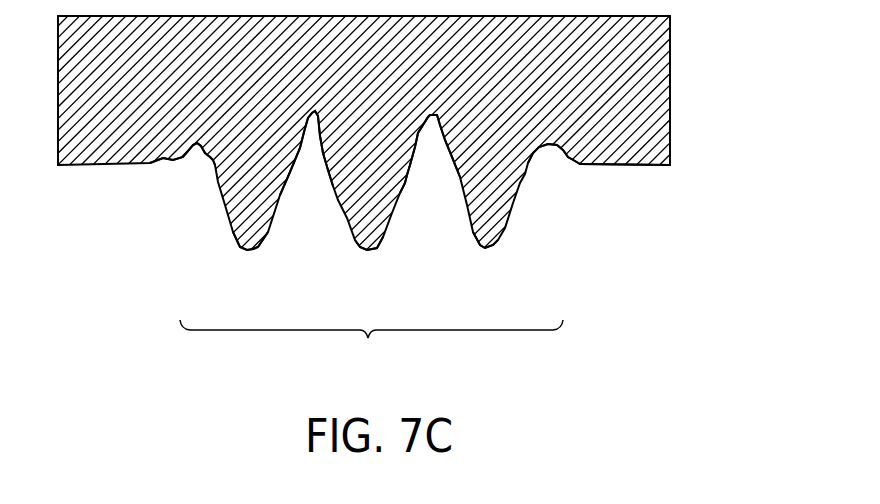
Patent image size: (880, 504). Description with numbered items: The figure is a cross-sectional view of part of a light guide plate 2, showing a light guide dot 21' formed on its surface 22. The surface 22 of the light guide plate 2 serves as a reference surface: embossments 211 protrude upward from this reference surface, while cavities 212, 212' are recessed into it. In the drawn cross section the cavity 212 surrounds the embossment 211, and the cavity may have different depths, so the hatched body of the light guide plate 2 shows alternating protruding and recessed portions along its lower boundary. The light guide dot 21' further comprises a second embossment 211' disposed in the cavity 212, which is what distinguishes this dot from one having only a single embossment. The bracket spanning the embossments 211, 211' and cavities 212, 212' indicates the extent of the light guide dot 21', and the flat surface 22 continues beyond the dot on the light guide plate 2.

The light guide plate 2 is at (668, 72).
The surface 22 is at (637, 167).
The cavity 212 is at (365, 193).
The cavity 212' is at (370, 177).
The embossment 211 is at (306, 274).
The second embossment 211' is at (490, 274).
The light guide dot 21' is at (371, 353).